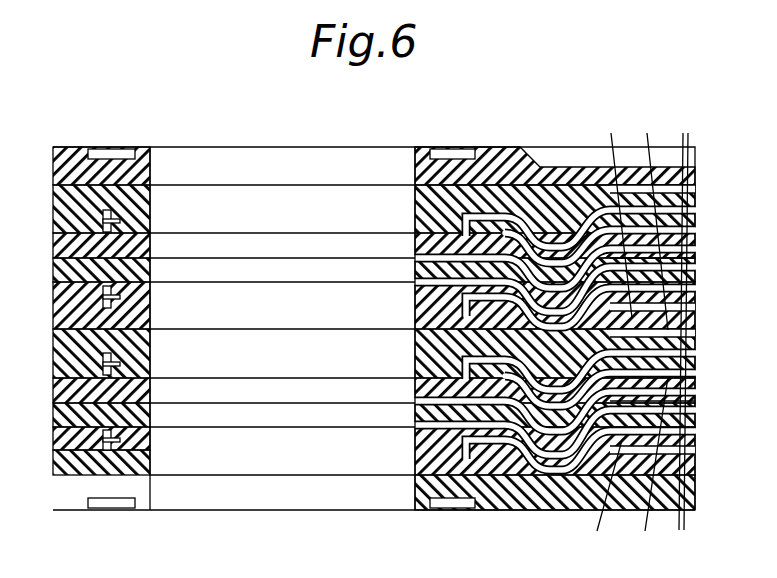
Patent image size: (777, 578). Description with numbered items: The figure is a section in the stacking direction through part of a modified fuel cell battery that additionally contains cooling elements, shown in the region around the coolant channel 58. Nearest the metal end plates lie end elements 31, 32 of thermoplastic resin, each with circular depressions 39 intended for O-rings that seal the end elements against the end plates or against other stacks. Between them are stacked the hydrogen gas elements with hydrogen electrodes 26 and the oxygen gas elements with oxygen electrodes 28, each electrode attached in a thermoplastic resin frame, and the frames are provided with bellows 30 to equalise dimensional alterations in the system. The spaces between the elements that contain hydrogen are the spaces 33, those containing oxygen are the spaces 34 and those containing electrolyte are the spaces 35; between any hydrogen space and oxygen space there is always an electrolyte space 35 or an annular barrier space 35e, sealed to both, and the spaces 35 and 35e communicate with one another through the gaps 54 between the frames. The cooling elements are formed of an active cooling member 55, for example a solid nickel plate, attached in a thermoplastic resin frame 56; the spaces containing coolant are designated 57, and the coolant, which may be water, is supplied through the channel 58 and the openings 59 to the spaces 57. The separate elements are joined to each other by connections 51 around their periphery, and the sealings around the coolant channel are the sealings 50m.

The hydrogen electrode 26 is at (642, 334).
The oxygen electrode 28 is at (678, 334).
The bellows 30 is at (561, 252).
The end element 31 is at (514, 508).
The end element 32 is at (60, 147).
The space containing hydrogen 33 is at (695, 232).
The space containing oxygen 34 is at (694, 186).
The space containing electrolyte 35 is at (693, 215).
The barrier space 35e is at (120, 221).
The circular depression 39 is at (108, 149).
The sealing around the coolant channel 50m is at (150, 185).
The connection around the periphery 51 is at (53, 226).
The gap 54 is at (601, 334).
The active cooling member 55 is at (695, 250).
The thermoplastic resin frame 56 is at (495, 430).
The space containing coolant 57 is at (695, 264).
The channel 58 is at (251, 150).
The opening 59 is at (418, 258).